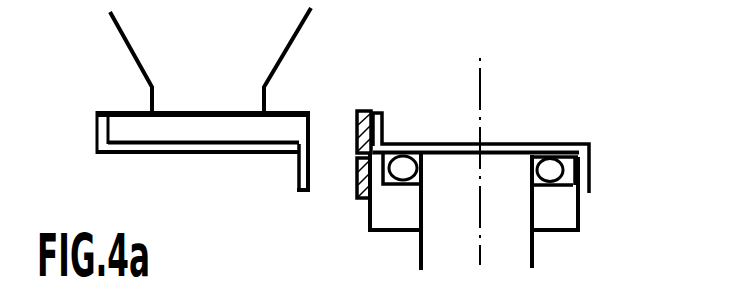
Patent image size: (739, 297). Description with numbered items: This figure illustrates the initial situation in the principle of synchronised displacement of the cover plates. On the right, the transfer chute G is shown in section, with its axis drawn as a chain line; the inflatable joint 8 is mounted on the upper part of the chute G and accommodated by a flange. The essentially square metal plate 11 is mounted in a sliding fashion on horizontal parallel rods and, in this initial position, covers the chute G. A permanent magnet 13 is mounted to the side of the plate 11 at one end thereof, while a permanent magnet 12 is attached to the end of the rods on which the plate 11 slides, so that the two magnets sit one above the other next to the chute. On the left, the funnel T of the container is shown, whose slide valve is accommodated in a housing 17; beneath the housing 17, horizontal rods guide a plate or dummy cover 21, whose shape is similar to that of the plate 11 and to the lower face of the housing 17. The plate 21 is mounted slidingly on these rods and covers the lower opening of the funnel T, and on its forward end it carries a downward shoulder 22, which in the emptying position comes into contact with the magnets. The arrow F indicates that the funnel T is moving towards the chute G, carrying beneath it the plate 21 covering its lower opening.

The funnel T is at (134, 64).
The force direction arrow F is at (362, 77).
The dummy cover plate 21 is at (196, 153).
The housing 17 is at (115, 130).
The downward shoulder 22 is at (299, 172).
The permanent magnet 13 is at (365, 110).
The permanent magnet 12 is at (366, 182).
The metal plate 11 is at (520, 145).
The inflatable joint 8 is at (556, 171).
The transfer chute G is at (518, 239).